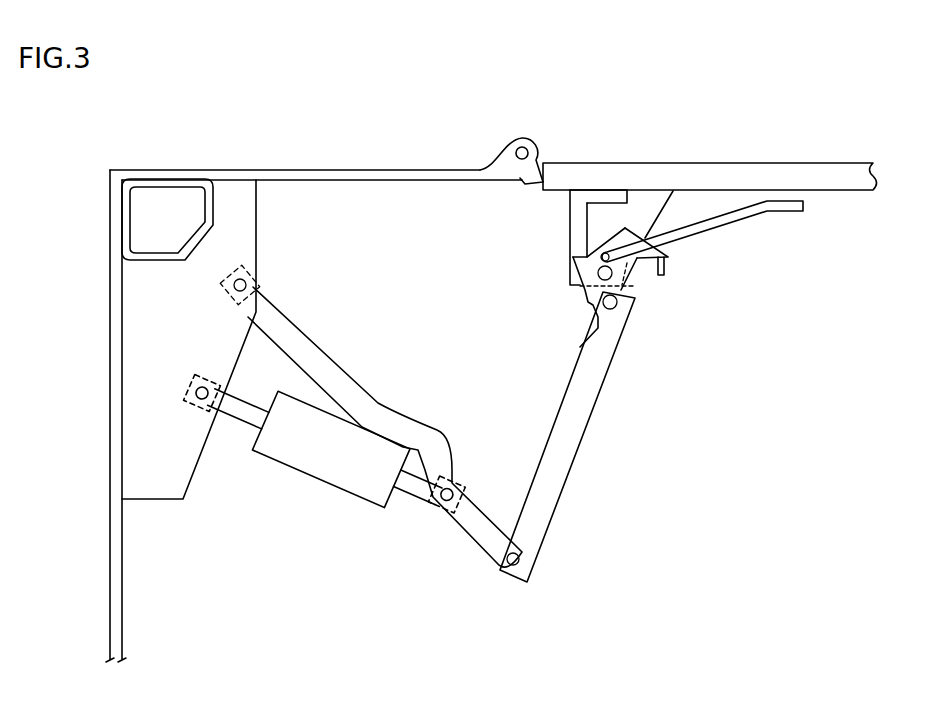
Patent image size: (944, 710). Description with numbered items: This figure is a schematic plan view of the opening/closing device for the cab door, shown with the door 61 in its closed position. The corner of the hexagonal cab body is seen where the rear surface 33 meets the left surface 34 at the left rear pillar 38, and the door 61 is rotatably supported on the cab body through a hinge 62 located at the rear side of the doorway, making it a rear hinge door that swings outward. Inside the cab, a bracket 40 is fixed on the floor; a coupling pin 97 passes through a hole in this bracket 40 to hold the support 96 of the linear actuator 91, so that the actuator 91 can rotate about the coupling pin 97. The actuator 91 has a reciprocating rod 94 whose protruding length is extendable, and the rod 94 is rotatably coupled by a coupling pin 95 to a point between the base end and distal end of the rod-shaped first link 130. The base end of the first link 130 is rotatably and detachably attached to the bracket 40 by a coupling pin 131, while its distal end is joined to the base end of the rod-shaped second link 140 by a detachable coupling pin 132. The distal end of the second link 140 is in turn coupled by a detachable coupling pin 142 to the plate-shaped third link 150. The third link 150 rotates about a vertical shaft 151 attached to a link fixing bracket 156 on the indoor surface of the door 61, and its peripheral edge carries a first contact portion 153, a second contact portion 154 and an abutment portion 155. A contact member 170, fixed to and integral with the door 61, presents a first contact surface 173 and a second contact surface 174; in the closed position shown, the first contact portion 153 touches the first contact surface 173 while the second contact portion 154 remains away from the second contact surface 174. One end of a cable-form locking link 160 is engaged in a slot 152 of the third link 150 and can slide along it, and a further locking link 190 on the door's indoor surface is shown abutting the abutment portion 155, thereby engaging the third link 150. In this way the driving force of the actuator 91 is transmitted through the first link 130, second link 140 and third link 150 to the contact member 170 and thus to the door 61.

The rear surface 33 is at (115, 450).
The left surface 34 is at (337, 178).
The left rear pillar 38 is at (147, 180).
The bracket 40 is at (235, 228).
The door 61 is at (710, 178).
The hinge 62 is at (522, 140).
The actuator 91 is at (320, 478).
The rod 94 is at (402, 487).
The coupling pin 95 is at (446, 505).
The support 96 is at (240, 415).
The coupling pin 97 is at (203, 402).
The first link 130 is at (345, 390).
The coupling pin 131 is at (250, 284).
The coupling pin 132 is at (513, 567).
The second link 140 is at (583, 432).
The coupling pin 142 is at (618, 310).
The third link 150 is at (634, 300).
The shaft 151 is at (580, 288).
The slot 152 is at (597, 246).
The first contact portion 153 is at (597, 268).
The second contact portion 154 is at (613, 236).
The abutment portion 155 is at (646, 262).
The link fixing bracket 156 is at (642, 197).
The locking link 160 is at (760, 212).
The contact member 170 is at (537, 200).
The first contact surface 173 is at (570, 266).
The second contact surface 174 is at (596, 205).
The locking link 190 is at (668, 268).